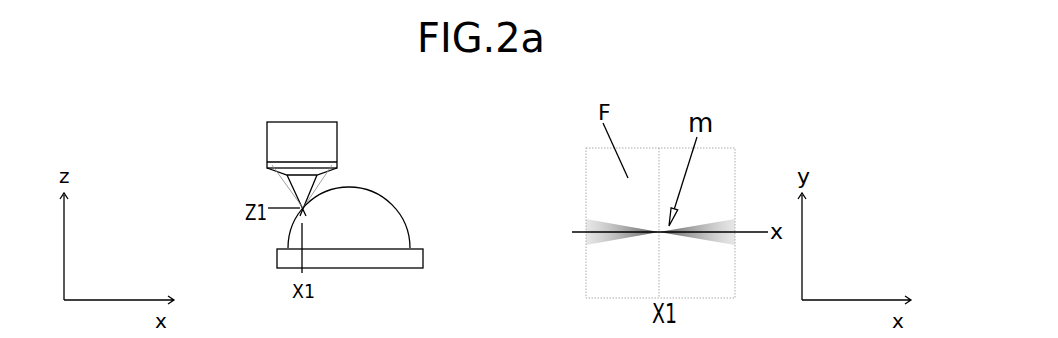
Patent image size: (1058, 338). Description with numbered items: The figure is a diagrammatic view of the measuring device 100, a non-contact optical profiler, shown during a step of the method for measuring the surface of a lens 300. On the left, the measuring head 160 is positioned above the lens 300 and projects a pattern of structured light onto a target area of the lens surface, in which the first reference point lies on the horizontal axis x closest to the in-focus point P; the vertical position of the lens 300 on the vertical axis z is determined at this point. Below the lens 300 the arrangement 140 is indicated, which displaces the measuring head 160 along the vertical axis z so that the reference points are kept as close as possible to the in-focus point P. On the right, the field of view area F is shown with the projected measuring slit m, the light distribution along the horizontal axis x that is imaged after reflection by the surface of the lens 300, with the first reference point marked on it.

The measuring device 100 is at (222, 136).
The measuring head 160 is at (293, 122).
The lens 300 is at (365, 188).
The arrangement for displacing the measuring head 140 is at (388, 260).